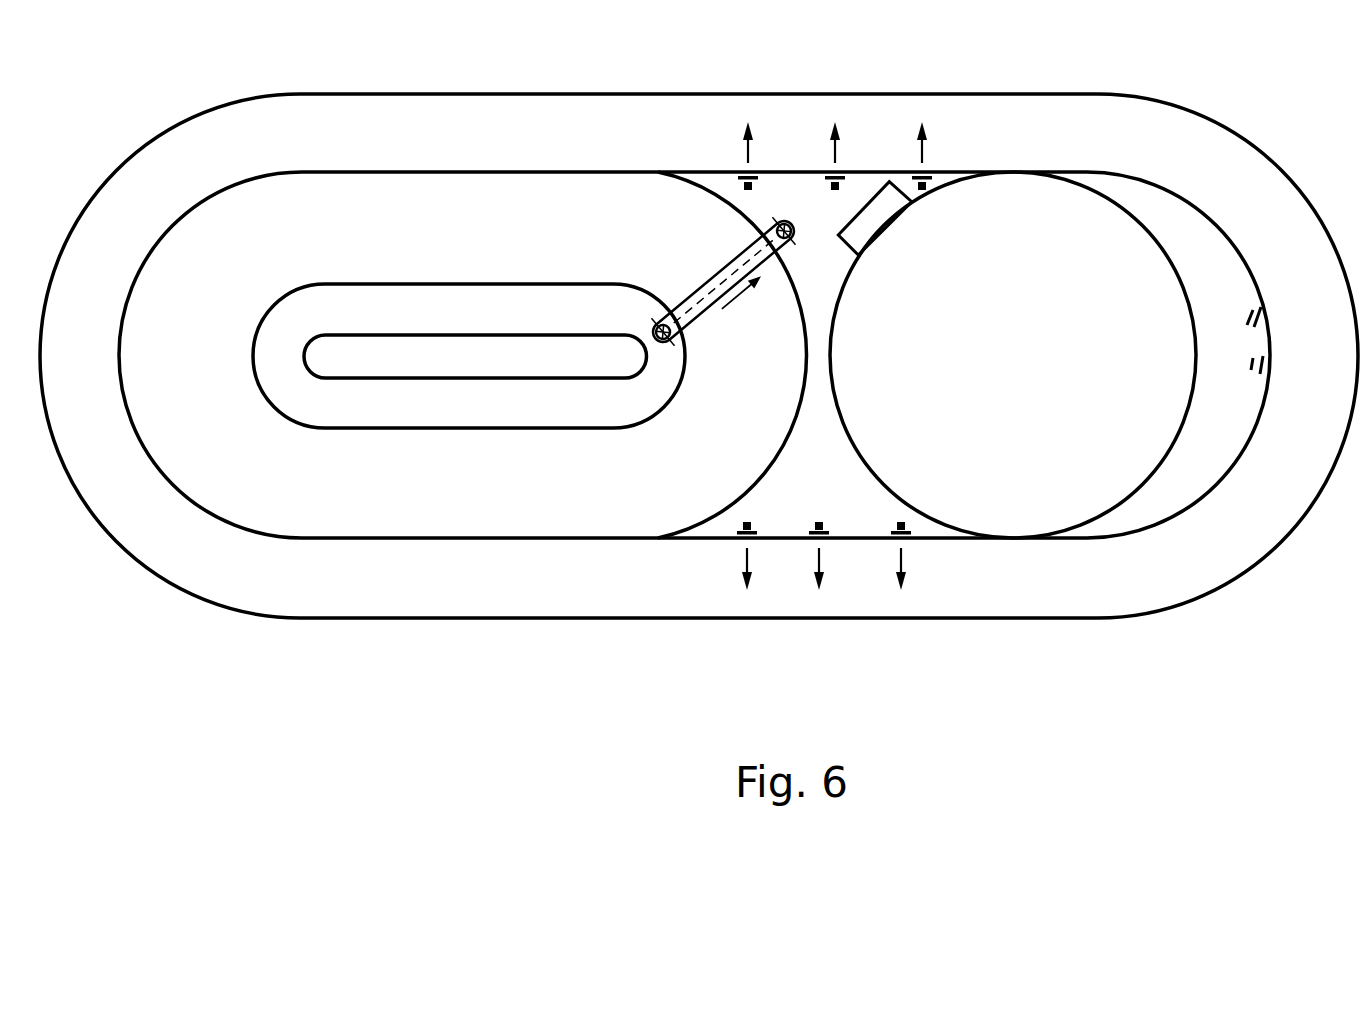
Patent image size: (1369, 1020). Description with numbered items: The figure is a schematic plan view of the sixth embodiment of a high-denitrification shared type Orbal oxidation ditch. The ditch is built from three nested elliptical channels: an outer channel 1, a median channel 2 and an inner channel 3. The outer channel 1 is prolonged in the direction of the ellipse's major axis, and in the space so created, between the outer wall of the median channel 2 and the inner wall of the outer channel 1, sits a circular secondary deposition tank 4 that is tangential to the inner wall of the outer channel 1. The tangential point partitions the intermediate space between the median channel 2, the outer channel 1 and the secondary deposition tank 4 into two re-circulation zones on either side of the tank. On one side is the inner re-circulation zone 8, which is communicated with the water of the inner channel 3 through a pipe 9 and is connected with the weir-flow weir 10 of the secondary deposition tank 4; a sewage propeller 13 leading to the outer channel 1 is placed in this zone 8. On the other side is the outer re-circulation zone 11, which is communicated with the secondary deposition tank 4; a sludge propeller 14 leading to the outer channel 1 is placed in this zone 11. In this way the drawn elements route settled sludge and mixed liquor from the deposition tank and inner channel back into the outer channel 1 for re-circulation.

The outer channel 1 is at (699, 356).
The median channel 2 is at (631, 355).
The inner channel 3 is at (469, 356).
The secondary deposition tank 4 is at (1013, 355).
The inner re-circulation zone 8 is at (834, 356).
The pipe 9 is at (726, 284).
The weir-flow weir 10 is at (874, 218).
The outer re-circulation zone 11 is at (694, 355).
The sewage propeller 13 is at (852, 355).
The sludge propeller 14 is at (1235, 326).